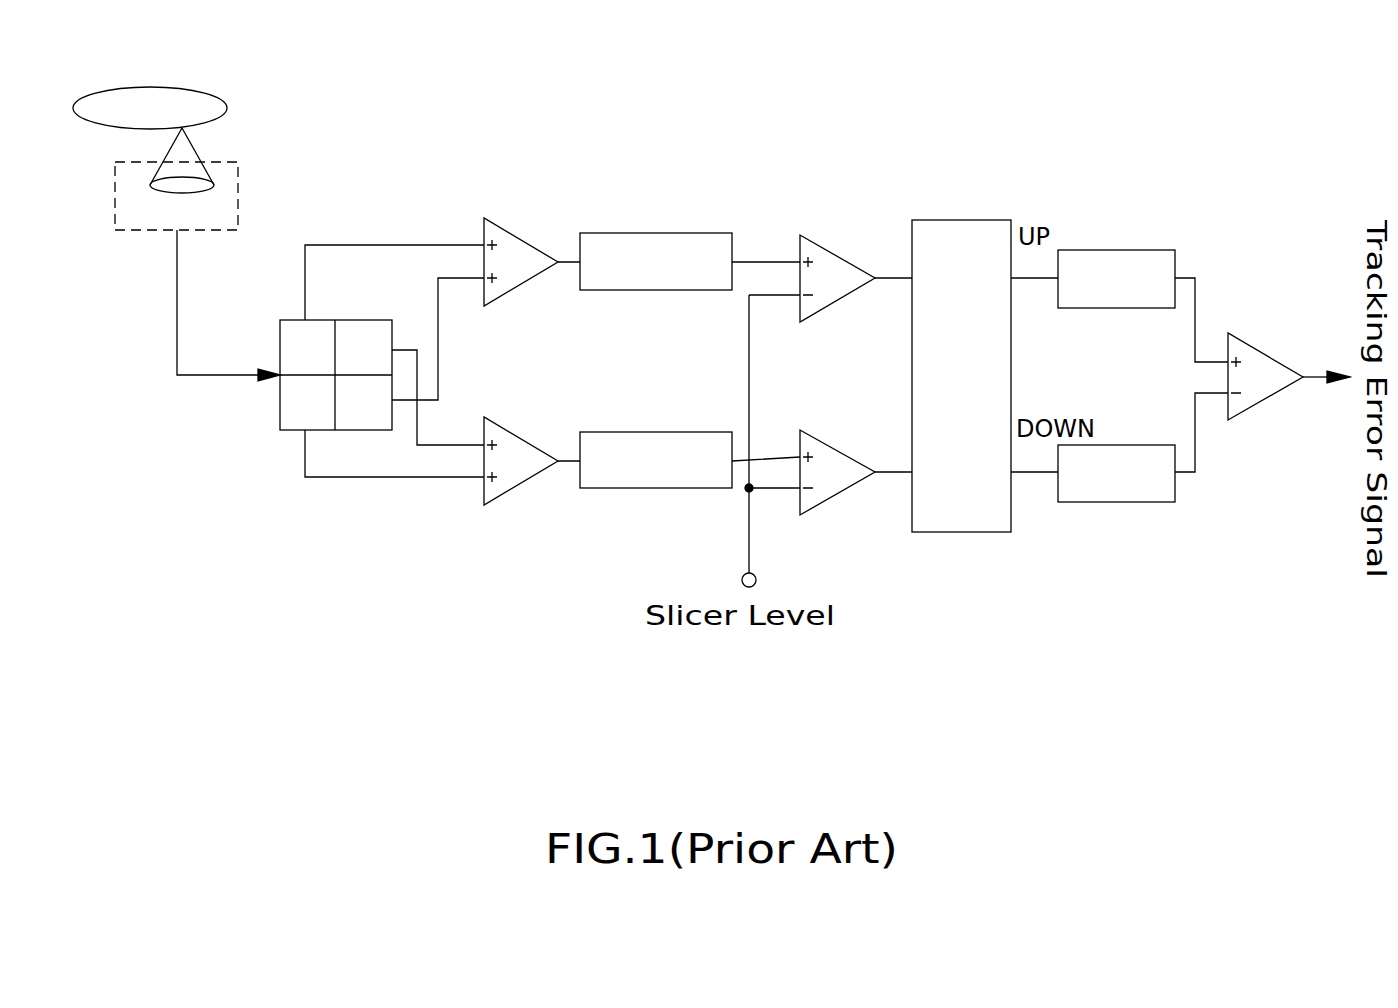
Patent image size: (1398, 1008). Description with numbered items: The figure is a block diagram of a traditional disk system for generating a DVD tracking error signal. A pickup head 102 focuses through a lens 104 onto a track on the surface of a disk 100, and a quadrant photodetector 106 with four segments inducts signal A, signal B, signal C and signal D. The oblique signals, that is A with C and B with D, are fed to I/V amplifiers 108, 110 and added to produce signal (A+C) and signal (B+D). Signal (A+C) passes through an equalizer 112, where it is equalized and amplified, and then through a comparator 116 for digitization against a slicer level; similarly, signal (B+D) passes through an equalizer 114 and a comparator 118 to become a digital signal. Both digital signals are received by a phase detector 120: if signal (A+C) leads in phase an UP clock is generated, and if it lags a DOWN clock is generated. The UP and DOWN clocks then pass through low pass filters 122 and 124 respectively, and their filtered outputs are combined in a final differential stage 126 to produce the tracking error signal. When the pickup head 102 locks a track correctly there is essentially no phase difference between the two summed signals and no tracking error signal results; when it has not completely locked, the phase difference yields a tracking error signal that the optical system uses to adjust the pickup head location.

The disk 100 is at (220, 95).
The pickup head 102 is at (238, 190).
The lens 104 is at (167, 190).
The quadrant photodetector 106 is at (292, 430).
The I/V amplifier 108 is at (492, 222).
The I/V amplifier 110 is at (492, 500).
The equalizer 112 is at (657, 233).
The equalizer 114 is at (657, 488).
The comparator 116 is at (808, 238).
The comparator 118 is at (808, 512).
The phase detector 120 is at (958, 220).
The low pass filter 122 is at (1118, 250).
The low pass filter 124 is at (1118, 502).
The differential amplifier 126 is at (1265, 352).